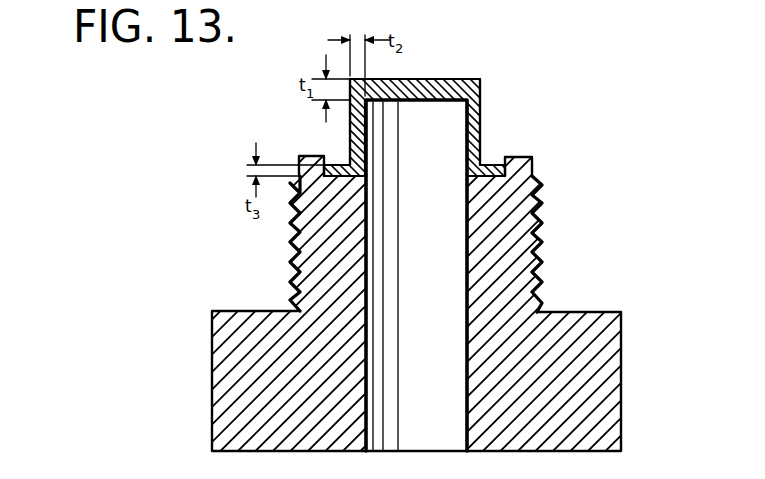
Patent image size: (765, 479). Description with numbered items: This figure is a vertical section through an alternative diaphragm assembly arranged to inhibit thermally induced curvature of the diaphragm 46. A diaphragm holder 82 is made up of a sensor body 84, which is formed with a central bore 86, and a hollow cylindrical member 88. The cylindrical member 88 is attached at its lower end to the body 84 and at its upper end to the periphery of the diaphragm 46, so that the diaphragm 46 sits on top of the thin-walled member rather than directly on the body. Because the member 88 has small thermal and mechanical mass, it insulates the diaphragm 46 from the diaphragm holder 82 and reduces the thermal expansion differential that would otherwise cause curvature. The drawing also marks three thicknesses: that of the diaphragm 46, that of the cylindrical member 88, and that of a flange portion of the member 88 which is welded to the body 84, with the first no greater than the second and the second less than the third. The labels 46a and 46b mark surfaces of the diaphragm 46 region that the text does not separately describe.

The diaphragm 46 is at (410, 107).
The cap top wall 46a is at (380, 78).
The liner 46b is at (435, 104).
The diaphragm holder 82 is at (298, 105).
The sensor body 84 is at (557, 312).
The central bore 86 is at (440, 303).
The hollow cylindrical member 88 is at (482, 137).